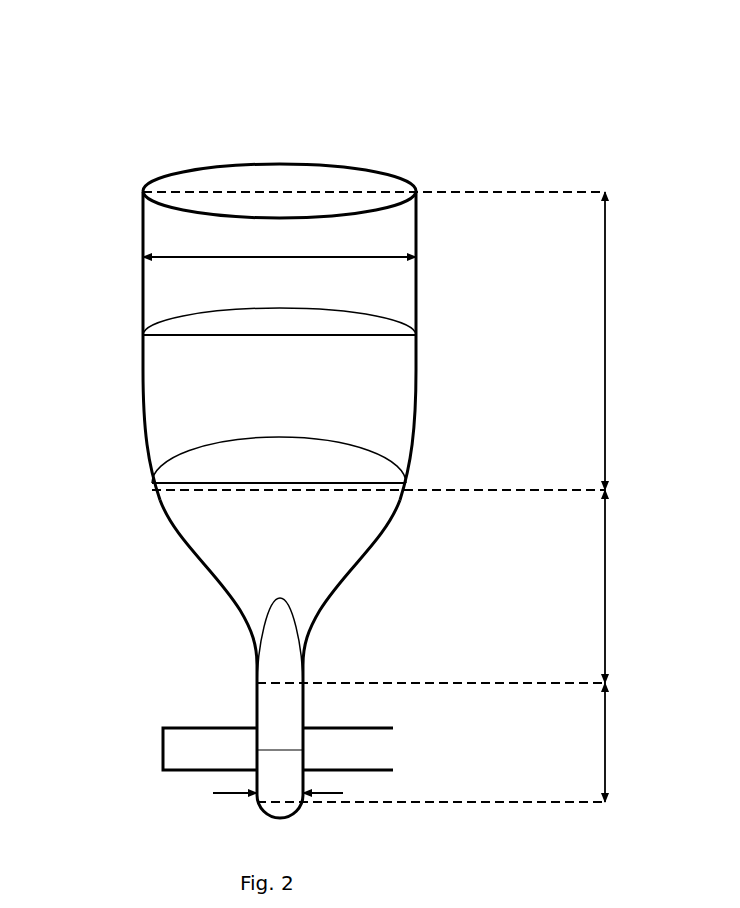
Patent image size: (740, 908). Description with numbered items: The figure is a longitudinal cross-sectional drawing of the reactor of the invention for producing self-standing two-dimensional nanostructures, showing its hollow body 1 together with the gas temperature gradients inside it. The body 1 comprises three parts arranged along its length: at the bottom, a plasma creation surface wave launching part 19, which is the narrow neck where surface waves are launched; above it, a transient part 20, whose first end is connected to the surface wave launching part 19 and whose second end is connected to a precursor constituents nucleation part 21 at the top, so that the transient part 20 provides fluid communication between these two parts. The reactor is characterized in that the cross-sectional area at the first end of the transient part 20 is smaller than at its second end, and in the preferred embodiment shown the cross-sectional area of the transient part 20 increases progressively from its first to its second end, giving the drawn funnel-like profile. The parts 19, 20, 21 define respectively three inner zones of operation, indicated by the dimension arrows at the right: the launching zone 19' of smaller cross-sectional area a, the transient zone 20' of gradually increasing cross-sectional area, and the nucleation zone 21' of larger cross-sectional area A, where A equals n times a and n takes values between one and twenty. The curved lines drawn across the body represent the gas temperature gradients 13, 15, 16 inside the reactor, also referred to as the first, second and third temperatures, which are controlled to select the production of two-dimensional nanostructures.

The hollow body 1 is at (380, 130).
The gas temperature gradient 13 is at (419, 335).
The gas temperature gradient 15 is at (410, 475).
The gas temperature gradient 16 is at (306, 659).
The plasma creation surface wave launching part 19 is at (276, 741).
The transient part 20 is at (257, 582).
The precursor constituents nucleation part 21 is at (230, 332).
The nucleation zone 21' is at (633, 341).
The transient zone 20' is at (633, 596).
The zone of smaller cross-sectional area 19' is at (633, 751).